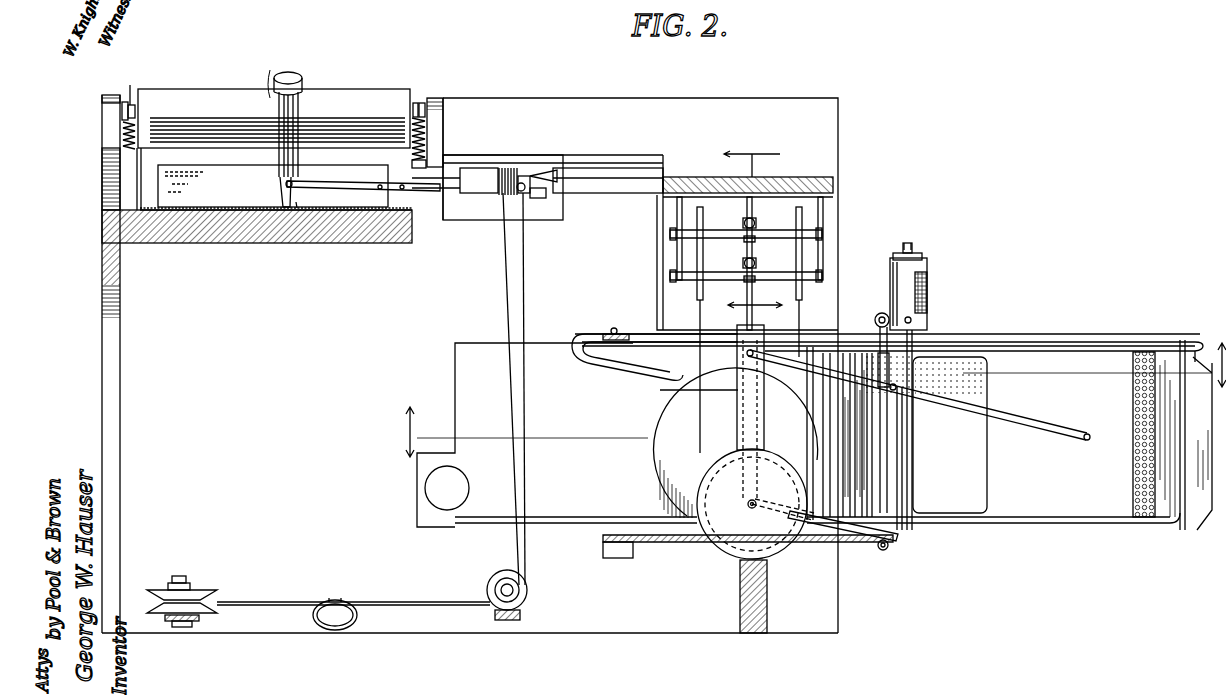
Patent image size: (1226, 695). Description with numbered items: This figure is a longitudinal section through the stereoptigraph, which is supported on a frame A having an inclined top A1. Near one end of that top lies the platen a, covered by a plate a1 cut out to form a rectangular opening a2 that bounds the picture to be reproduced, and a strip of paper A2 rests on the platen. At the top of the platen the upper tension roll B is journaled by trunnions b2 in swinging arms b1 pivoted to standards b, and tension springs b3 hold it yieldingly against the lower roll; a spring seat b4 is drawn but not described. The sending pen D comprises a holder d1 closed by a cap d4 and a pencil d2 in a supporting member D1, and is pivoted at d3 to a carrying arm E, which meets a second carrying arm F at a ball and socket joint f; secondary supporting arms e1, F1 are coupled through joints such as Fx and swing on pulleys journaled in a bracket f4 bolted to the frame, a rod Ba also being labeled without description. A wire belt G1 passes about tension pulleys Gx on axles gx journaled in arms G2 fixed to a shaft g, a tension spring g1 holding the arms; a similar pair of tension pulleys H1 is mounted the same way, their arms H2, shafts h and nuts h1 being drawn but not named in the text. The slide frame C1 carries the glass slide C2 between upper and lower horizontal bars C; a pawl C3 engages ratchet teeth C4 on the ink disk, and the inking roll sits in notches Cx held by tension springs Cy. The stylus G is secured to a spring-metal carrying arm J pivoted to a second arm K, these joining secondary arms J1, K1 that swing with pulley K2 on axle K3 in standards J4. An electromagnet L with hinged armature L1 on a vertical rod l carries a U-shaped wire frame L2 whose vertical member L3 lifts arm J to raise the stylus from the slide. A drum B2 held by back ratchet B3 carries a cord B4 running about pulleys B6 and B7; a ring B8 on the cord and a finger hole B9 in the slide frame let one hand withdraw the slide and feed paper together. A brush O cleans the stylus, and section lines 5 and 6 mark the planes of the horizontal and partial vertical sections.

The frame A is at (94, 298).
The inclined top A1 is at (205, 244).
The strip of paper A2 is at (263, 244).
The platen a is at (282, 210).
The plate a1 is at (152, 243).
The rectangular opening a2 is at (154, 191).
The upper tension roll B is at (212, 82).
The drum B2 is at (470, 168).
The back ratchet and wheel B3 is at (553, 186).
The cord B4 is at (285, 602).
The pulley B6 is at (528, 594).
The pulley B7 is at (205, 590).
The ring B8 is at (336, 630).
The finger hole B9 is at (426, 490).
The rod Ba is at (518, 272).
The standards b is at (100, 104).
The vertically swinging arms b1 is at (128, 98).
The trunnions b2 is at (140, 106).
The tension springs b3 is at (135, 128).
The spring seat b4 is at (426, 160).
The horizontal bars C is at (1039, 324).
The slide frame C1 is at (455, 381).
The glass slide C2 is at (1040, 412).
The pawl C3 is at (605, 362).
The ratchet teeth C4 is at (685, 360).
The notches Cx is at (767, 412).
The tension springs Cy is at (875, 320).
The sending pen D is at (272, 70).
The pencil supporting member D1 is at (292, 200).
The holder d1 is at (300, 106).
The pencil d2 is at (304, 210).
The pivot d3 is at (274, 190).
The cap d4 is at (290, 72).
The carrying arm E is at (447, 190).
The secondary supporting arm e1 is at (333, 182).
The second carrying arm F is at (524, 172).
The secondary supporting arm F1 is at (590, 168).
The ball and socket joint Fx is at (540, 175).
The ball and socket joint f is at (524, 194).
The bracket f4 is at (392, 192).
The stylus G is at (1088, 432).
The wire belt G1 is at (672, 470).
The arms G2 is at (762, 178).
The tension pulleys Gx is at (700, 213).
The shaft g is at (679, 197).
The tension spring g1 is at (754, 225).
The axles gx is at (718, 232).
The tension pulleys H1 is at (696, 290).
The bar H2 is at (695, 260).
The shaft end h is at (690, 234).
The nut h1 is at (757, 264).
The carrying arm J is at (1040, 428).
The secondary carrying arm J1 is at (660, 390).
The standards J4 is at (700, 392).
The second carrying arm K is at (898, 448).
The secondary carrying arm K1 is at (880, 540).
The rotary member K2 is at (728, 550).
The axle K3 is at (752, 508).
The electromagnet L is at (928, 284).
The armature L1 is at (922, 270).
The U-shaped wire frame L2 is at (955, 357).
The vertical member L3 is at (987, 470).
The vertical rod l is at (910, 414).
The brush O is at (1130, 463).
The section line 5— 5 is at (805, 388).
The section line 6— 6 is at (758, 236).